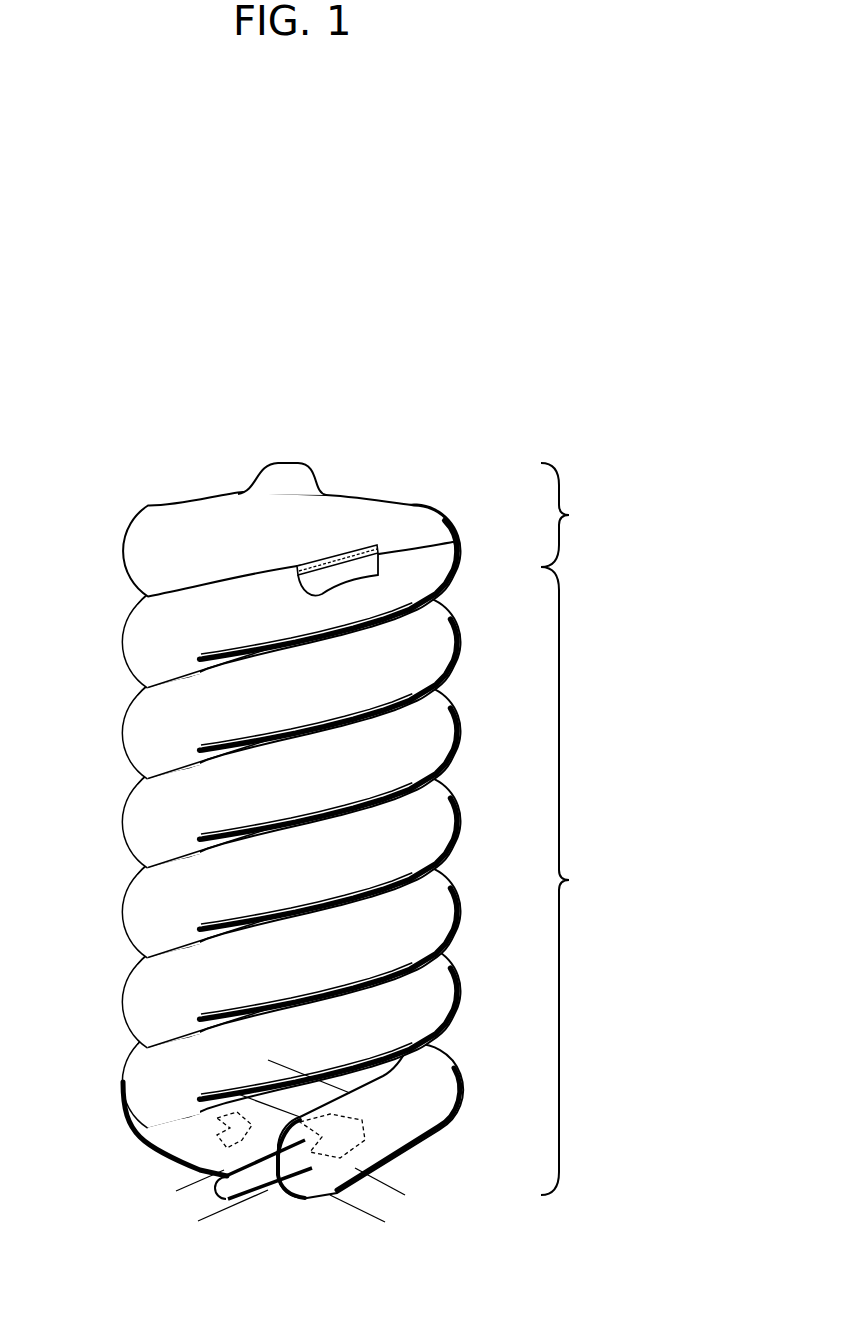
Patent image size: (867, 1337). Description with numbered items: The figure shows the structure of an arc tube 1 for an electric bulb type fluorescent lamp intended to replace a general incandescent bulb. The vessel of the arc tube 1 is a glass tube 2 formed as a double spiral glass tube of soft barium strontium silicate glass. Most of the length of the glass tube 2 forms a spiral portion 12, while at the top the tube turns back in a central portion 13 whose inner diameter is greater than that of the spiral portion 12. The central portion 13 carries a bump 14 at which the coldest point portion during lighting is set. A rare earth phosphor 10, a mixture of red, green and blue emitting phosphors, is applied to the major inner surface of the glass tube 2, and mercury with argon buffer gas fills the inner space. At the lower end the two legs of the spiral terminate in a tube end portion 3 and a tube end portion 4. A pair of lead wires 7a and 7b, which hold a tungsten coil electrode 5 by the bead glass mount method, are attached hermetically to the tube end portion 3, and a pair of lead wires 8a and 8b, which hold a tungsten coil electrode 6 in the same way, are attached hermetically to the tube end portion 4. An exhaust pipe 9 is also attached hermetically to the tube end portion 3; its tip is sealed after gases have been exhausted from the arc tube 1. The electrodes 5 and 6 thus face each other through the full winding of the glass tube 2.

The arc tube 1 is at (300, 273).
The glass tube 2 is at (318, 844).
The tube end portion 3 is at (400, 1135).
The tube end portion 4 is at (220, 1152).
The tungsten coil electrode 5 is at (367, 1117).
The tungsten coil electrode 6 is at (215, 1130).
The lead wire 7a is at (403, 1188).
The lead wire 7b is at (385, 1221).
The lead wire 8a is at (181, 1188).
The lead wire 8b is at (207, 1218).
The exhaust pipe 9 is at (248, 1180).
The rare earth phosphor 10 is at (362, 543).
The spiral portion 12 is at (588, 881).
The central portion 13 is at (588, 515).
The bump 14 is at (288, 467).